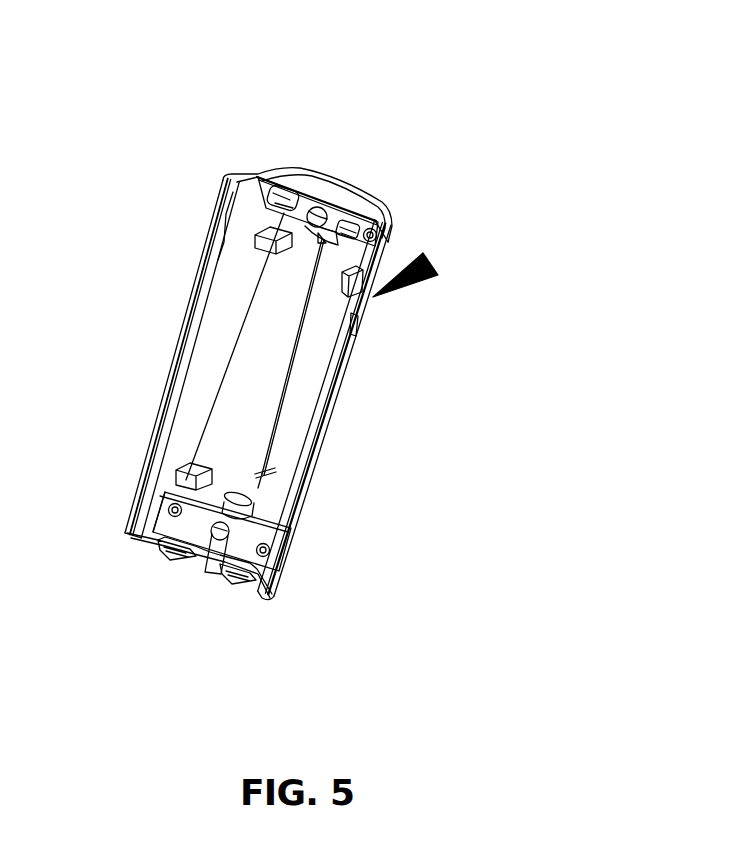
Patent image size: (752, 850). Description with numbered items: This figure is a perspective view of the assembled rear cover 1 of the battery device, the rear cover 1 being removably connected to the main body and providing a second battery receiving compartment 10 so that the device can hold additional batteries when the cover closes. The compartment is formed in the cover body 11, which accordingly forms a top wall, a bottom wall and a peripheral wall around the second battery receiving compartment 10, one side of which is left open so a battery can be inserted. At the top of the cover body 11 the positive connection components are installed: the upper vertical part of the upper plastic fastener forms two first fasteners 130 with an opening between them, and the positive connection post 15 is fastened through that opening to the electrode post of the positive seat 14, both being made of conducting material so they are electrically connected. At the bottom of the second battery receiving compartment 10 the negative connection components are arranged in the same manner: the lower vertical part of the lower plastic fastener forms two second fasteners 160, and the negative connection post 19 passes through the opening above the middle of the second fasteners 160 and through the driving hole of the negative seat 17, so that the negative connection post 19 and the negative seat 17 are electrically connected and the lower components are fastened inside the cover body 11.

The rear cover 1 is at (432, 262).
The second battery receiving compartment 10 is at (270, 363).
The cover body 11 is at (203, 288).
The positive seat 14 is at (354, 328).
The positive connection post 15 is at (316, 208).
The negative seat 17 is at (236, 491).
The negative connection post 19 is at (178, 482).
The first fasteners 130 is at (276, 186).
The second fasteners 160 is at (173, 548).